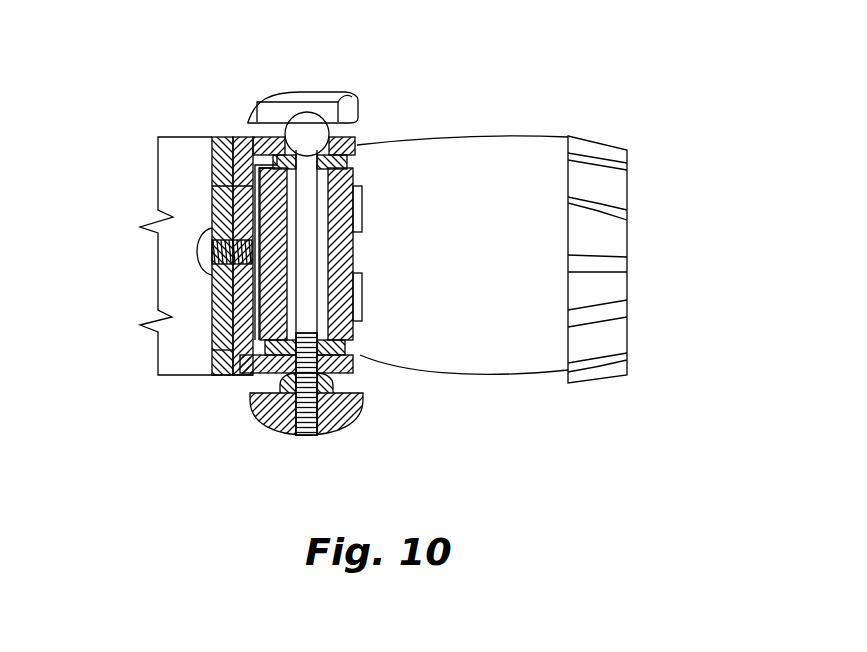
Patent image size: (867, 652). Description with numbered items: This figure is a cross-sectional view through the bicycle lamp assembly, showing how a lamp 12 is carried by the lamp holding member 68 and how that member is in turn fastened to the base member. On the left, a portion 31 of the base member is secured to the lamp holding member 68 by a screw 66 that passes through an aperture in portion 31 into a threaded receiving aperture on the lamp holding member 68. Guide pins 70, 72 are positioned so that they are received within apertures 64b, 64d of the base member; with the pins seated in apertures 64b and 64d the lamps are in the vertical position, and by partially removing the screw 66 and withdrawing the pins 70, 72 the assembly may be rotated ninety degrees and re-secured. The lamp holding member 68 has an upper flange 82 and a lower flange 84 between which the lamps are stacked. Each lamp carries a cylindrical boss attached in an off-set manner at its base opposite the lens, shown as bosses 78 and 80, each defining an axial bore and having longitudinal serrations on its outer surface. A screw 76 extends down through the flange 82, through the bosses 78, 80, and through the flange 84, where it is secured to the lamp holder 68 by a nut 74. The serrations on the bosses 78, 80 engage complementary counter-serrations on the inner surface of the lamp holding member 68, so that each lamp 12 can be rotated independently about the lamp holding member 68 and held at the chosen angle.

The lamp 12 is at (628, 223).
The portion of base member 31 is at (212, 350).
The aperture 64b is at (240, 137).
The aperture 64d is at (223, 377).
The screw 66 is at (198, 250).
The lamp holding member 68 is at (243, 137).
The guide pin 70 is at (212, 312).
The guide pin 72 is at (212, 188).
The nut 74 is at (353, 427).
The screw 76 is at (305, 92).
The boss 78 is at (350, 218).
The boss 80 is at (353, 298).
The flange 82 is at (357, 145).
The flange 84 is at (353, 357).